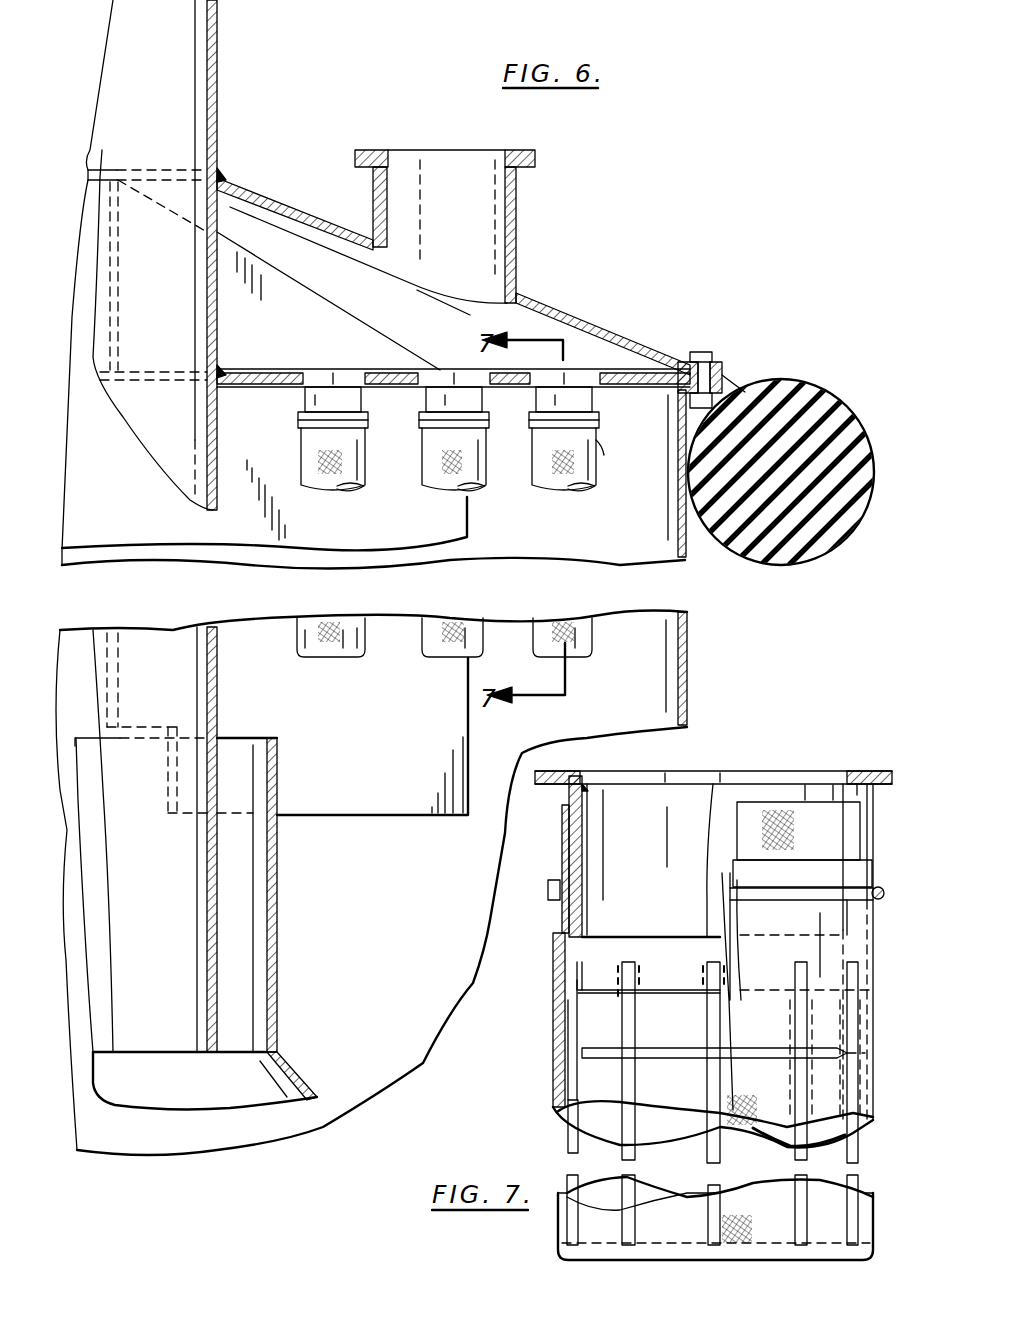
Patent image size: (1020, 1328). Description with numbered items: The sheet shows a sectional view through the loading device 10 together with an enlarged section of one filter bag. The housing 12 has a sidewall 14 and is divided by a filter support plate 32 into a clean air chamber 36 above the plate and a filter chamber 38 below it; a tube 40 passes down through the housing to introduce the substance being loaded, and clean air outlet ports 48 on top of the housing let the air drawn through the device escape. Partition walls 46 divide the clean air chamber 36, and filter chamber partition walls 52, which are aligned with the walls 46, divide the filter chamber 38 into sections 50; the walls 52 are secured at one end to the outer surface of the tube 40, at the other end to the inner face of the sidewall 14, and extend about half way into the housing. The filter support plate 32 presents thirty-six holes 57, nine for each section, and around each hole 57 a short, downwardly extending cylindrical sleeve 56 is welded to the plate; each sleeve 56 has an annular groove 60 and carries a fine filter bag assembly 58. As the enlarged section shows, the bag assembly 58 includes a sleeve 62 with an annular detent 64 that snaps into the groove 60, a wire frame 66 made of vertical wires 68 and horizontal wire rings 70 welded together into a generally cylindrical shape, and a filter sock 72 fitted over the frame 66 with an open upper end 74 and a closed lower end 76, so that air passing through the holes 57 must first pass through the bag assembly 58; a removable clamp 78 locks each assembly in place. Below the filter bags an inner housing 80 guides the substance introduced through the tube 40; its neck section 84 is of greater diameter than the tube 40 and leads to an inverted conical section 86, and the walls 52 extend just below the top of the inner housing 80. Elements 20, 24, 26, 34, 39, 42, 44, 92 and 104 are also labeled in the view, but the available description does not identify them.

In FIG. 6, the loading device 10 is at (694, 266).
In FIG. 6, the housing 12 is at (695, 683).
In FIG. 6, the sidewall 14 is at (690, 562).
In FIG. 6, the hinge ball 20 is at (809, 476).
In FIG. 6, the flange 24 is at (722, 368).
In FIG. 6, the bolt 26 is at (700, 350).
In FIG. 6, the filter support plate 32 is at (625, 392).
In FIG. 7, the filter support plate 32 is at (872, 771).
In FIG. 6, the gasket 34 is at (724, 378).
In FIG. 6, the clean air chamber 36 is at (278, 218).
In FIG. 6, the filter chamber 38 is at (636, 659).
In FIG. 6, the mounting flange 39 is at (88, 172).
In FIG. 6, the tube 40 is at (218, 68).
In FIG. 6, the weld 42 is at (222, 170).
In FIG. 6, the weld 44 is at (225, 368).
In FIG. 6, the partition walls 46 is at (360, 330).
In FIG. 6, the clean air outlet ports 48 is at (517, 222).
In FIG. 6, the sections 50 is at (580, 692).
In FIG. 6, the filter chamber partition walls 52 is at (400, 548).
In FIG. 6, the cylindrical sleeve 56 is at (463, 400).
In FIG. 7, the cylindrical sleeve 56 is at (582, 852).
In FIG. 6, the holes 57 is at (465, 401).
In FIG. 7, the holes 57 is at (721, 924).
In FIG. 6, the fine filter bag assembly 58 is at (352, 665).
In FIG. 7, the fine filter bag assembly 58 is at (543, 1022).
In FIG. 7, the annular groove 60 is at (715, 918).
In FIG. 7, the sleeve 62 is at (556, 888).
In FIG. 7, the annular detent 64 is at (560, 923).
In FIG. 7, the wire frame 66 is at (613, 1003).
In FIG. 7, the vertical wires 68 is at (712, 1010).
In FIG. 7, the horizontal wire rings 70 is at (672, 1052).
In FIG. 6, the filter sock 72 is at (485, 478).
In FIG. 7, the filter sock 72 is at (560, 1192).
In FIG. 7, the open upper end 74 is at (765, 805).
In FIG. 7, the closed lower end 76 is at (585, 1262).
In FIG. 6, the removable clamp 78 is at (600, 440).
In FIG. 7, the removable clamp 78 is at (884, 896).
In FIG. 6, the inner housing 80 is at (316, 1029).
In FIG. 6, the neck section 84 is at (280, 903).
In FIG. 6, the inverted conical section 86 is at (306, 1082).
In FIG. 6, the outlet pipe 92 is at (280, 867).
In FIG. 6, the hatched ball section 104 is at (800, 550).